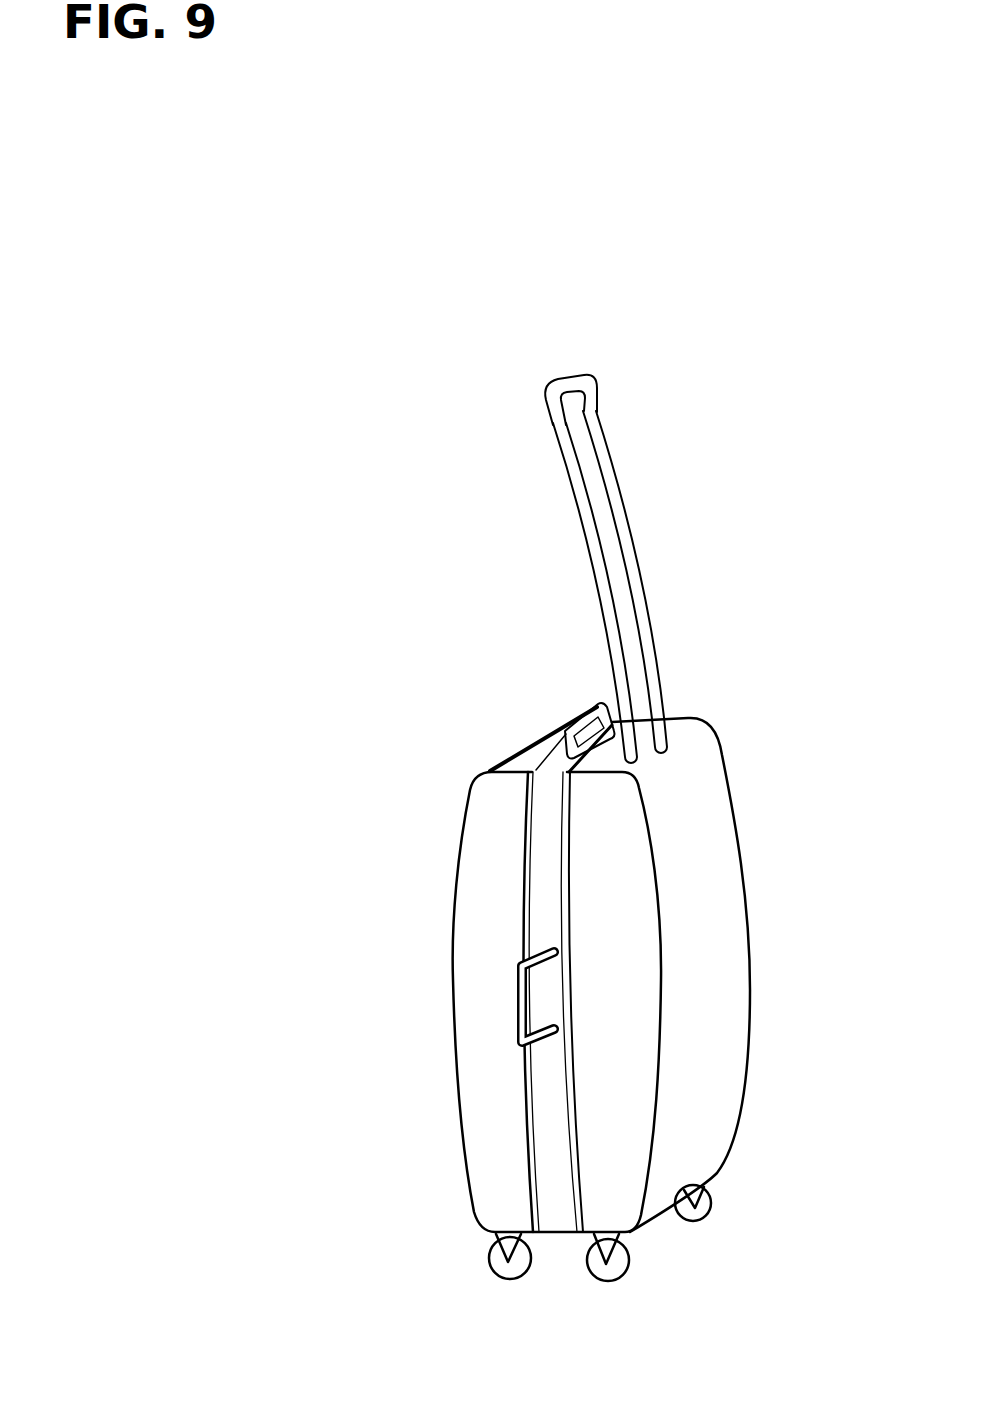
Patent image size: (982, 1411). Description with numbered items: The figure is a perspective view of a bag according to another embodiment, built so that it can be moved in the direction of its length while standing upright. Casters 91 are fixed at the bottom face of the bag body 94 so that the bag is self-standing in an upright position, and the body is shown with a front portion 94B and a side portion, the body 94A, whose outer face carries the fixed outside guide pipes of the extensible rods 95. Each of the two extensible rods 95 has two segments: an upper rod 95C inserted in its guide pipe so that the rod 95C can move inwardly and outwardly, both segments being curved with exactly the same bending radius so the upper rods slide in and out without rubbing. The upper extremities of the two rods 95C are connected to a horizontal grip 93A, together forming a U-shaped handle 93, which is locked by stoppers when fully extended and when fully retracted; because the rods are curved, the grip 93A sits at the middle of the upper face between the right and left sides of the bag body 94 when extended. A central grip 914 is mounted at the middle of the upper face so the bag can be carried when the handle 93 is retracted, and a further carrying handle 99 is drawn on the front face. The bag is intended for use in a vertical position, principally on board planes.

The casters 91 is at (512, 1268).
The handle 93 is at (628, 531).
The horizontal grip 93A is at (553, 392).
The bag body 94 is at (611, 974).
The body 94A is at (640, 1080).
The front panel of body 94B is at (487, 1173).
The extensible rods 95 is at (666, 587).
The upper rod 95C is at (620, 510).
The carrying handle 99 is at (523, 1010).
The central grip 914 is at (585, 717).